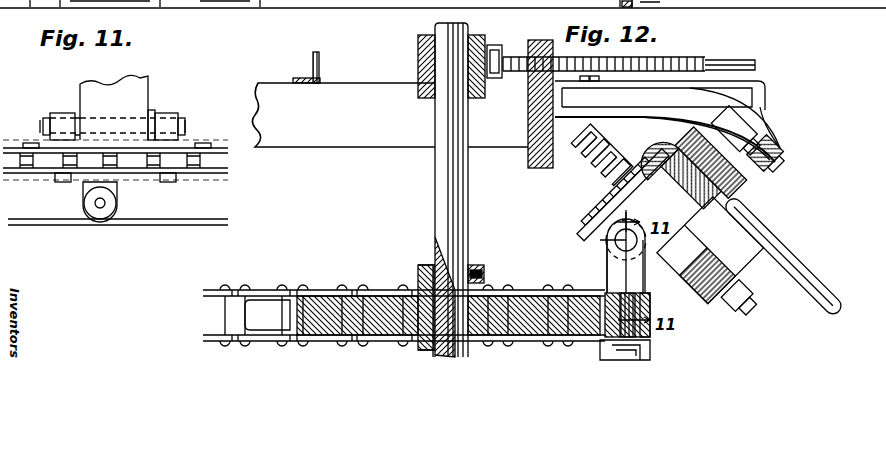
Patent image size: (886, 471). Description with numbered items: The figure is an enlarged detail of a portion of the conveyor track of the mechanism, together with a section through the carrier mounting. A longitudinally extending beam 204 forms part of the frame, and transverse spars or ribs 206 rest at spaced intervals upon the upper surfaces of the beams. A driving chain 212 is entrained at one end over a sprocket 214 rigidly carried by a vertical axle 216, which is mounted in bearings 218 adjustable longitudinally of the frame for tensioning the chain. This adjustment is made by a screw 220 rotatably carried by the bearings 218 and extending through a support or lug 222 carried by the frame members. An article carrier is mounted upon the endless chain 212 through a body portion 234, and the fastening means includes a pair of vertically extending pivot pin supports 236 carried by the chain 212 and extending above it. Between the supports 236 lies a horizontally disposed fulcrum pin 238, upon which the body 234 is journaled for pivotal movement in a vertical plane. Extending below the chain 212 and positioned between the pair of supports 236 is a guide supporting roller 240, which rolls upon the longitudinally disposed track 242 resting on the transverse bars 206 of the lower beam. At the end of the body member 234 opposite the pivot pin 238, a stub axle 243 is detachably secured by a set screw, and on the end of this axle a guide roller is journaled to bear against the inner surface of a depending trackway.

In FIG. 12, the beam 204 is at (352, 140).
In FIG. 12, the transverse spar 206 is at (322, 76).
In FIG. 12, the driving chain 212 is at (260, 292).
In FIG. 12, the sprocket 214 is at (348, 300).
In FIG. 12, the vertical axle 216 is at (446, 186).
In FIG. 12, the bearing 218 is at (486, 50).
In FIG. 12, the screw 220 is at (660, 56).
In FIG. 12, the support lug 222 is at (540, 170).
In FIG. 11, the body portion 234 is at (128, 92).
In FIG. 11, the pivot pin support 236 is at (63, 115).
In FIG. 12, the pivot pin support 236 is at (650, 301).
In FIG. 11, the fulcrum pin 238 is at (153, 113).
In FIG. 12, the fulcrum pin 238 is at (610, 236).
In FIG. 11, the guide supporting roller 240 is at (110, 203).
In FIG. 11, the track 242 is at (133, 226).
In FIG. 12, the stub axle 243 is at (702, 150).